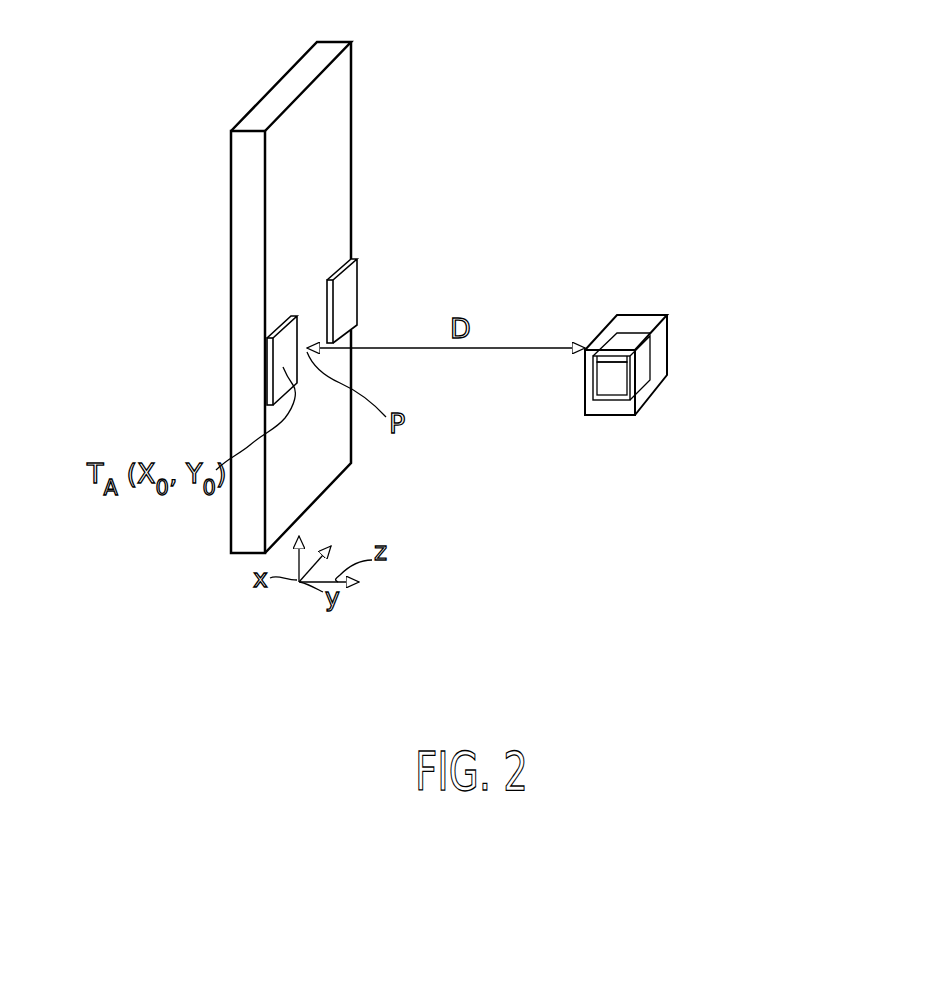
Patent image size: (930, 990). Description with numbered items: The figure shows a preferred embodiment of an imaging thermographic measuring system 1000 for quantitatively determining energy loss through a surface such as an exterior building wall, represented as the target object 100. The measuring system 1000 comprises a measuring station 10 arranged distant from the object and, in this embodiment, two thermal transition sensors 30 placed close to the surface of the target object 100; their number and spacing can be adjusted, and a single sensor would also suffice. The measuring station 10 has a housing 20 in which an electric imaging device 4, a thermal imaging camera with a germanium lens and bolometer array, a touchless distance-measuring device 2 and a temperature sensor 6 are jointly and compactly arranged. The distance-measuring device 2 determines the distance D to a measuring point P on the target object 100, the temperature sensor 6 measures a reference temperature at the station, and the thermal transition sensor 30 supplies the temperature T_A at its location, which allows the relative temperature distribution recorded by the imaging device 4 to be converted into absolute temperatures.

The imaging thermographic measuring system 1000 is at (586, 231).
The target object 100 is at (344, 149).
The thermal transition sensor 30 is at (345, 291).
The measuring station 10 is at (686, 311).
The housing 20 is at (668, 357).
The touchless distance-measuring device 2 is at (612, 345).
The electric imaging device 4 is at (602, 378).
The temperature sensor 6 is at (585, 408).